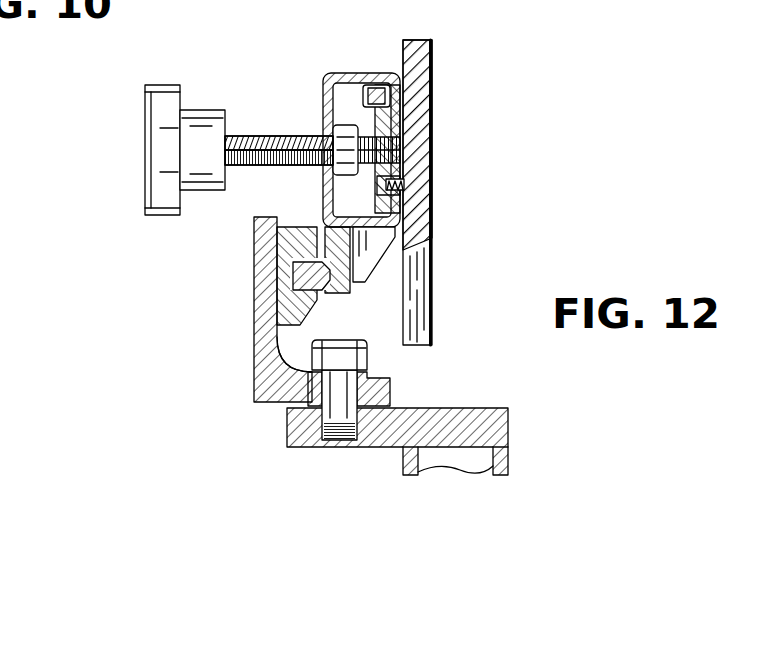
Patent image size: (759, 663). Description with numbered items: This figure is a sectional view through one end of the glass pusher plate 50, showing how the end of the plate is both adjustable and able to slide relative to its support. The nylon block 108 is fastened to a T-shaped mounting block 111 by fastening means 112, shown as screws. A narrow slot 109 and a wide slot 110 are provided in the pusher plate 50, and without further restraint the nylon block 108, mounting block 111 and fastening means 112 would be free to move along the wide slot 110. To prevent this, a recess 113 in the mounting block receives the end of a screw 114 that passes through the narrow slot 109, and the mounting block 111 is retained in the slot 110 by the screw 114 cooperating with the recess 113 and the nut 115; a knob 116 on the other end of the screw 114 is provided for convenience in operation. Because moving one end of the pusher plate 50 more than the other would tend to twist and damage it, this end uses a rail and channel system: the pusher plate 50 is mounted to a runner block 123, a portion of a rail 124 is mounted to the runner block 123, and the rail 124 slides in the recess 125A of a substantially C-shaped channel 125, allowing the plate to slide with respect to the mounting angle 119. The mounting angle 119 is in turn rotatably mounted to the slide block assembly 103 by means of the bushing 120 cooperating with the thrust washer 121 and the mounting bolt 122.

The glass pusher plate 50 is at (347, 74).
The slide block assembly 103 is at (493, 412).
The nylon block 108 is at (423, 298).
The narrow slot 109 is at (318, 147).
The wide slot 110 is at (368, 85).
The T-shaped mounting block 111 is at (387, 193).
The fastening means 112 is at (433, 190).
The recess 113 is at (405, 170).
The screw 114 is at (245, 142).
The nut 115 is at (343, 138).
The knob 116 is at (162, 108).
The mounting angle 119 is at (265, 336).
The bushing 120 is at (385, 368).
The thrust washer 121 is at (392, 404).
The mounting bolt 122 is at (292, 362).
The runner block 123 is at (385, 246).
The rail 124 is at (326, 296).
The C-shaped channel 125 is at (292, 241).
The recess 125A is at (300, 290).